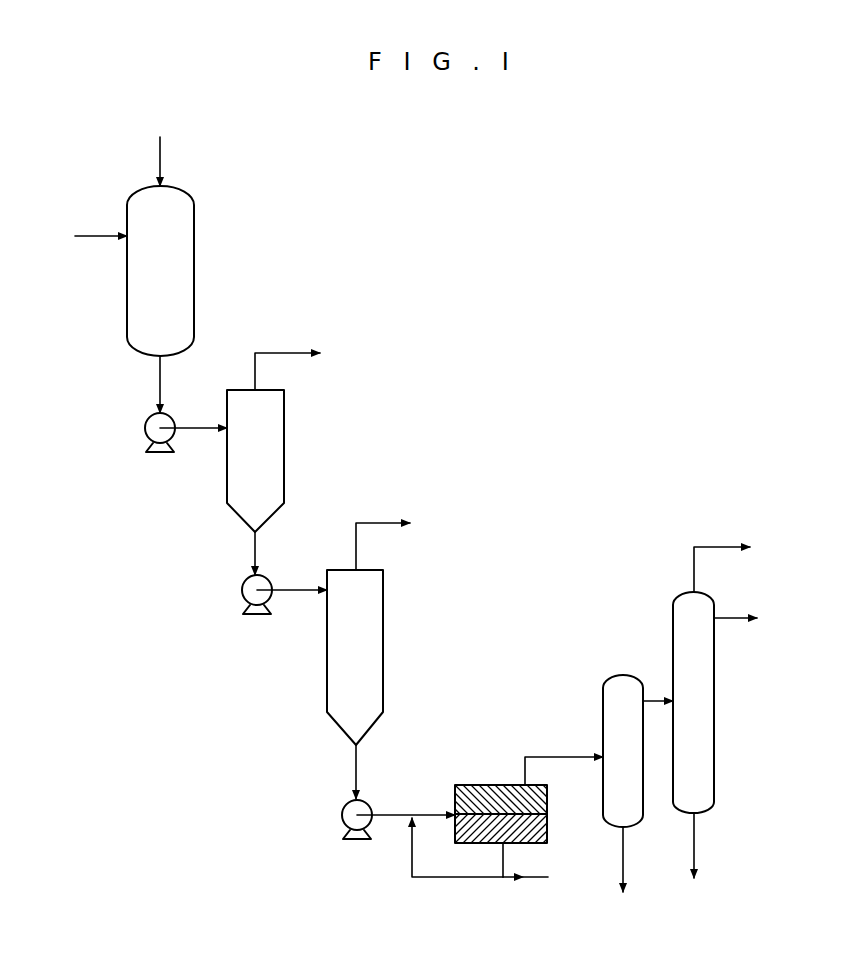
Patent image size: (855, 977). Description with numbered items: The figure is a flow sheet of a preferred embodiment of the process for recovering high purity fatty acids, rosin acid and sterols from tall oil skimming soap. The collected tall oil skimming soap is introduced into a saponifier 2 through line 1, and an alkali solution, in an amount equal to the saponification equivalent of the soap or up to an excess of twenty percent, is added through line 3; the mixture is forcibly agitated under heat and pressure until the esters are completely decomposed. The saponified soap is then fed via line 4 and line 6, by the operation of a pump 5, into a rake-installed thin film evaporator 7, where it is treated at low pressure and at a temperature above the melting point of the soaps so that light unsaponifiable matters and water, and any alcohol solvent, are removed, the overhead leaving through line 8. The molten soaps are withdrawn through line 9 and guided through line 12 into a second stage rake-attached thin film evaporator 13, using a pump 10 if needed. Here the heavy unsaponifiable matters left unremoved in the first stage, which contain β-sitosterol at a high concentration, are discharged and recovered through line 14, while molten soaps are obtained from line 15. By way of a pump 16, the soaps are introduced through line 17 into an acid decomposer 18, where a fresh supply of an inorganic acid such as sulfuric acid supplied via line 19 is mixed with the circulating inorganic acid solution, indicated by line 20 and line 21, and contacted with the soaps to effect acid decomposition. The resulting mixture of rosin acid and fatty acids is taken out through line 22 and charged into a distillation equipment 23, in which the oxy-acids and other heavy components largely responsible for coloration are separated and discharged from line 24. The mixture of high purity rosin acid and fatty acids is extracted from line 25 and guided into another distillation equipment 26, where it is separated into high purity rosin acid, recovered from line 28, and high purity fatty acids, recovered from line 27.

The line 1 is at (90, 237).
The saponifier 2 is at (195, 266).
The line 3 is at (159, 140).
The line 4 is at (161, 370).
The pump 5 is at (144, 429).
The line 6 is at (199, 433).
The rake-installed thin film evaporator 7 is at (284, 452).
The line 8 is at (279, 352).
The line 9 is at (256, 538).
The pump 10 is at (242, 593).
The line 12 is at (290, 598).
The rake-attached thin film evaporator 13 is at (383, 647).
The line 14 is at (357, 523).
The line 15 is at (357, 766).
The pump 16 is at (343, 815).
The line 17 is at (395, 812).
The acid decomposer 18 is at (547, 804).
The line 19 is at (539, 878).
The line 20 is at (503, 858).
The line 21 is at (432, 879).
The line 22 is at (538, 757).
The distillation equipment 23 is at (644, 744).
The line 24 is at (623, 877).
The line 25 is at (655, 699).
The distillation equipment 26 is at (714, 705).
The line 27 is at (732, 617).
The line 28 is at (694, 865).